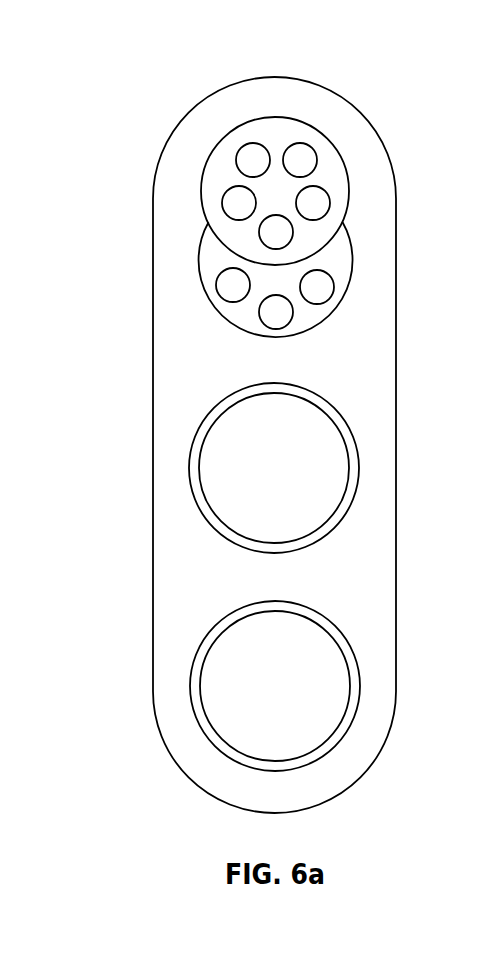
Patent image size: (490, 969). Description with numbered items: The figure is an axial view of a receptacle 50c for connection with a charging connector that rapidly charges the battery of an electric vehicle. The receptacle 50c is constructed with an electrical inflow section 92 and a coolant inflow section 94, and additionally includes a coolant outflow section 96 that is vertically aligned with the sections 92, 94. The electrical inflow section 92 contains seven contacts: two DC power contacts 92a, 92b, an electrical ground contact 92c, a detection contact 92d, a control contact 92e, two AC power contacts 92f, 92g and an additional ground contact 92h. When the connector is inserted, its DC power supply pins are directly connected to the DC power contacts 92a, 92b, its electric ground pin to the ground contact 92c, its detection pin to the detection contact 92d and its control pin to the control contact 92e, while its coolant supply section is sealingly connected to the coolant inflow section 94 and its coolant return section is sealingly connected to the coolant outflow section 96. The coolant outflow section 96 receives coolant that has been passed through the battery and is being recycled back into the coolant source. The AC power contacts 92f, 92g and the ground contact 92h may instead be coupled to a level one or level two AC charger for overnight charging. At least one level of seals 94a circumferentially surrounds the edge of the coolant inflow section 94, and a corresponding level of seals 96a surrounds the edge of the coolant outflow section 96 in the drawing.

The receptacle 50c is at (287, 77).
The electrical inflow section 92 is at (326, 137).
The DC power contact 92a is at (216, 287).
The DC power contact 92b is at (334, 284).
The electrical ground contact 92c is at (275, 330).
The detection contact 92d is at (330, 204).
The control contact 92e is at (222, 203).
The AC power contact 92f is at (236, 160).
The AC power contact 92g is at (318, 162).
The additional ground contact 92h is at (293, 234).
The coolant inflow section 94 is at (328, 433).
The seals 94a is at (252, 395).
The coolant outflow section 96 is at (323, 683).
The lumen wall 96a is at (197, 672).